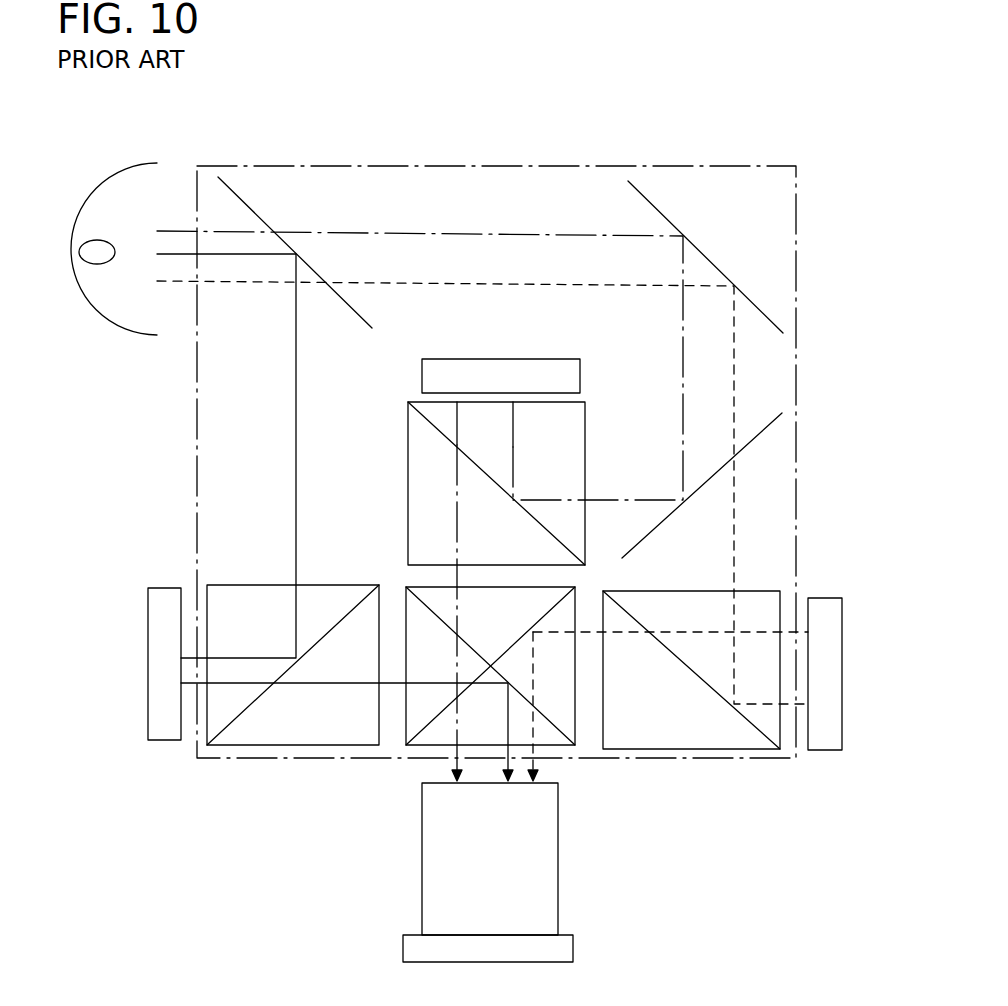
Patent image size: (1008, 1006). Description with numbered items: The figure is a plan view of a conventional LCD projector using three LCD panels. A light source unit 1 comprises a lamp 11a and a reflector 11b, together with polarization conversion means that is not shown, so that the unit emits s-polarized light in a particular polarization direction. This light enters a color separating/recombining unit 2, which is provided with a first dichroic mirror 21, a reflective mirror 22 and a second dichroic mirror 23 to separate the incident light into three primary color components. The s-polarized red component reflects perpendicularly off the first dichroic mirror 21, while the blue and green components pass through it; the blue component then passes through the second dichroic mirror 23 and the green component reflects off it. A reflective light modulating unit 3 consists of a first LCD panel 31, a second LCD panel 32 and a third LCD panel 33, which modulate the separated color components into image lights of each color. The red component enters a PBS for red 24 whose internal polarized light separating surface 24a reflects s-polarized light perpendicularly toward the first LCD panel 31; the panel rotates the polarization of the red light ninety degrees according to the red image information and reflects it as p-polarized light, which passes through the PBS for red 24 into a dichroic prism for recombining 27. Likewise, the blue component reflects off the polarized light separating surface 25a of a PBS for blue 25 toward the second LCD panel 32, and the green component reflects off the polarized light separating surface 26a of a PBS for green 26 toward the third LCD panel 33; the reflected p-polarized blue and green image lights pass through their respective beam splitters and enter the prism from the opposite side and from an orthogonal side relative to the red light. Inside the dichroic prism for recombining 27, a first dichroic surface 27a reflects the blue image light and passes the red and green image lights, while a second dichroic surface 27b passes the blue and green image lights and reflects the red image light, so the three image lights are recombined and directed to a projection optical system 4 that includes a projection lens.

The light source unit 1 is at (93, 237).
The lamp 11a is at (100, 241).
The reflector 11b is at (108, 326).
The color separating/recombining unit 2 is at (592, 160).
The first dichroic mirror 21 is at (252, 207).
The reflective mirror 22 is at (757, 307).
The second dichroic mirror 23 is at (752, 440).
The third LCD panel 33 is at (535, 372).
The PBS for green 26 is at (488, 472).
The polarized light separating surface 26a is at (445, 435).
The reflective light modulating unit 3 is at (129, 667).
The first LCD panel 31 is at (163, 627).
The PBS for red 24 is at (293, 672).
The polarized light separating surface 24a is at (322, 633).
The dichroic prism for recombining 27 is at (459, 722).
The first dichroic surface 27a is at (403, 728).
The second dichroic surface 27b is at (553, 732).
The PBS for blue 25 is at (691, 716).
The polarized light separating surface 25a is at (678, 662).
The second LCD panel 32 is at (823, 735).
The projection optical system 4 is at (537, 895).